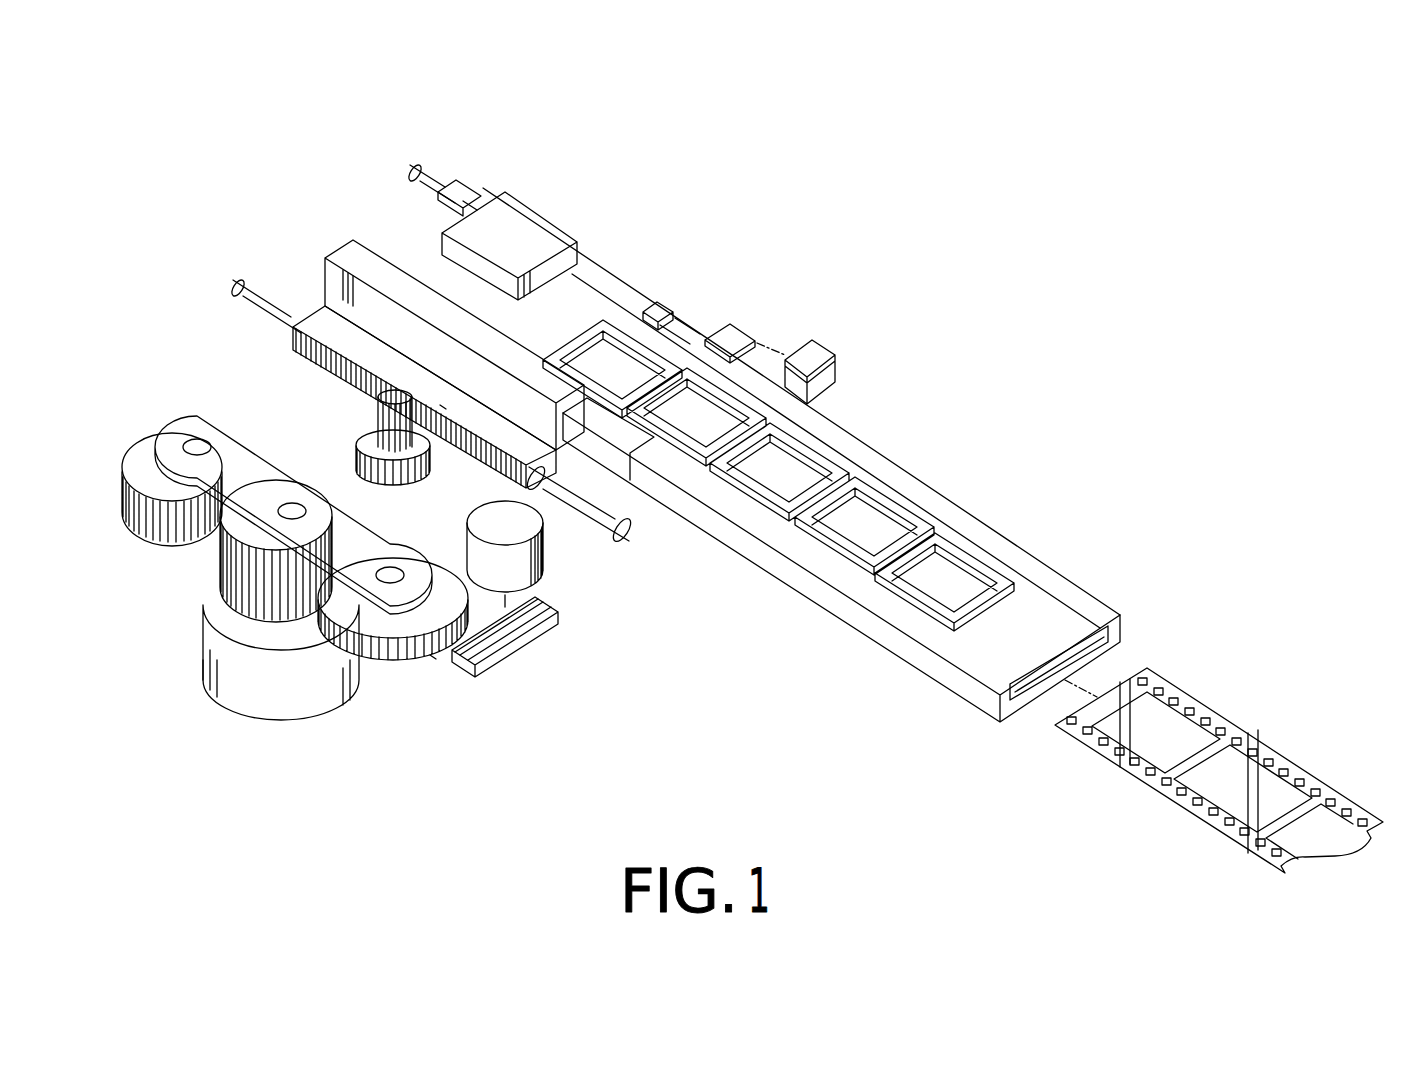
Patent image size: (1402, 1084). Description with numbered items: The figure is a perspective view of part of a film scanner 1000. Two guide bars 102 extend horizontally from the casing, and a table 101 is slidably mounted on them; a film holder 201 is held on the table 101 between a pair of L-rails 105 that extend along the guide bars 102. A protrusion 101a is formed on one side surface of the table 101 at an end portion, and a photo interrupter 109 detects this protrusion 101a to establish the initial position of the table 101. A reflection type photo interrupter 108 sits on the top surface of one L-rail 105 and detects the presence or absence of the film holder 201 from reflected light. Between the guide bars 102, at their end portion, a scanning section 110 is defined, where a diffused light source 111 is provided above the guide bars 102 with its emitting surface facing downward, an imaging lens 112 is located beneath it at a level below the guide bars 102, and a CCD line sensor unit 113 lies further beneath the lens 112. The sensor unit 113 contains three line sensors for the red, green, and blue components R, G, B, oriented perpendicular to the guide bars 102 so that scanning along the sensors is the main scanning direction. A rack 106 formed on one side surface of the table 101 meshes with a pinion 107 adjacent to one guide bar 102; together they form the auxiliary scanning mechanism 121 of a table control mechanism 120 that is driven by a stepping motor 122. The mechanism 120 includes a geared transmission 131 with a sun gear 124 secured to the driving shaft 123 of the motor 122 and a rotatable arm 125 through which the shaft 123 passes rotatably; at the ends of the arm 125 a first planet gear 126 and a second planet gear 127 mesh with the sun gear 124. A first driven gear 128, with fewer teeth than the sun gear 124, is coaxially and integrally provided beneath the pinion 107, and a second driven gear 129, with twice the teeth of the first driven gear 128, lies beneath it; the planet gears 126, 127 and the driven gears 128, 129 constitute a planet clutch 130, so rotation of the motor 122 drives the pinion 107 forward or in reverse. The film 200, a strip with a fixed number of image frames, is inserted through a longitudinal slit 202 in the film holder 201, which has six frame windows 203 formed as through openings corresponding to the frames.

The film scanner 1000 is at (948, 275).
The table 101 is at (333, 330).
The protrusion 101a is at (737, 332).
The guide bars 102 is at (418, 186).
The L-rails 105 is at (678, 330).
The rack 106 is at (348, 352).
The pinion 107 is at (382, 420).
The reflection type photo interrupter 108 is at (652, 308).
The photo interrupter 109 is at (826, 350).
The scanning section 110 is at (603, 253).
The diffused light source 111 is at (508, 243).
The imaging lens 112 is at (542, 557).
The CCD line sensor unit 113 is at (553, 610).
The red component line sensor R is at (533, 632).
The green component line sensor G is at (514, 647).
The blue component line sensor B is at (500, 657).
The table control mechanism 120 is at (318, 742).
The auxiliary scanning mechanism 121 is at (307, 423).
The stepping motor 122 is at (270, 690).
The driving shaft 123 is at (293, 503).
The sun gear 124 is at (222, 565).
The rotatable arm 125 is at (208, 488).
The first planet gear 126 is at (435, 660).
The second planet gear 127 is at (131, 533).
The first driven gear 128 is at (448, 407).
The second driven gear 129 is at (494, 431).
The planet clutch 130 is at (424, 669).
The geared transmission 131 is at (203, 688).
The film 200 is at (1183, 808).
The film holder 201 is at (990, 547).
The slit 202 is at (1090, 658).
The frame windows 203 is at (810, 488).